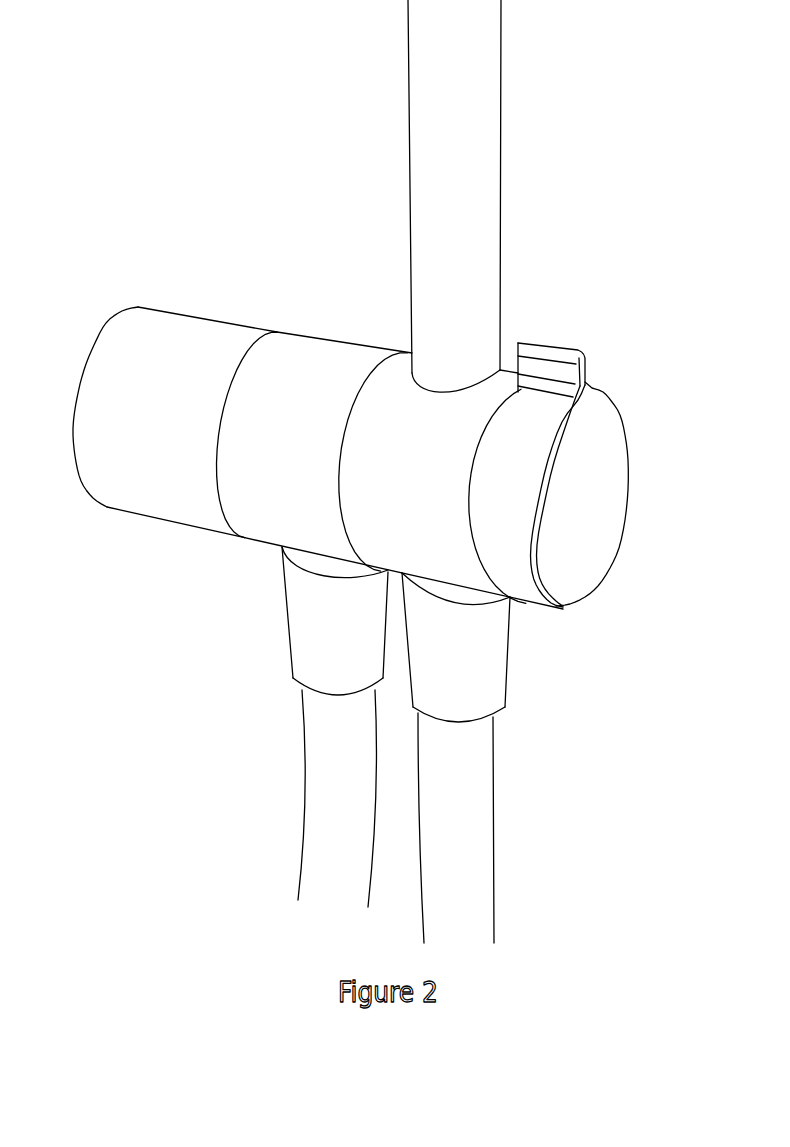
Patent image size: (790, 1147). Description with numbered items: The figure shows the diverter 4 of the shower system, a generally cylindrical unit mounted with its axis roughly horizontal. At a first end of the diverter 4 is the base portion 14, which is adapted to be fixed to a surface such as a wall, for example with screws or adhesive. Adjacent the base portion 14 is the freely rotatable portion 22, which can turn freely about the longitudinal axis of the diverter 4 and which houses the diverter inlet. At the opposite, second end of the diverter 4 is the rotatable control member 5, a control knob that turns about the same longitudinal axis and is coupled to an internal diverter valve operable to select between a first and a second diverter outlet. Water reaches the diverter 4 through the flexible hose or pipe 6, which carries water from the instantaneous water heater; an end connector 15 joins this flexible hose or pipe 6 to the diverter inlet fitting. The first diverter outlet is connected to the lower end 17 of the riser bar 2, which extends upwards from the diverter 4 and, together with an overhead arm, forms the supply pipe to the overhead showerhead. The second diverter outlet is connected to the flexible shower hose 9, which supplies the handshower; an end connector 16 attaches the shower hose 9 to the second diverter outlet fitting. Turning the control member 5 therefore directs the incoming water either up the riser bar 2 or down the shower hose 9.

The riser bar 2 is at (488, 33).
The diverter 4 is at (333, 353).
The base portion 14 is at (127, 340).
The freely rotatable portion 22 is at (257, 520).
The lower end of riser bar 17 is at (503, 366).
The rotatable control member 5 is at (590, 497).
The end connector 15 is at (293, 622).
The end connector 16 is at (477, 603).
The flexible hose or pipe 6 is at (318, 795).
The shower hose 9 is at (477, 872).